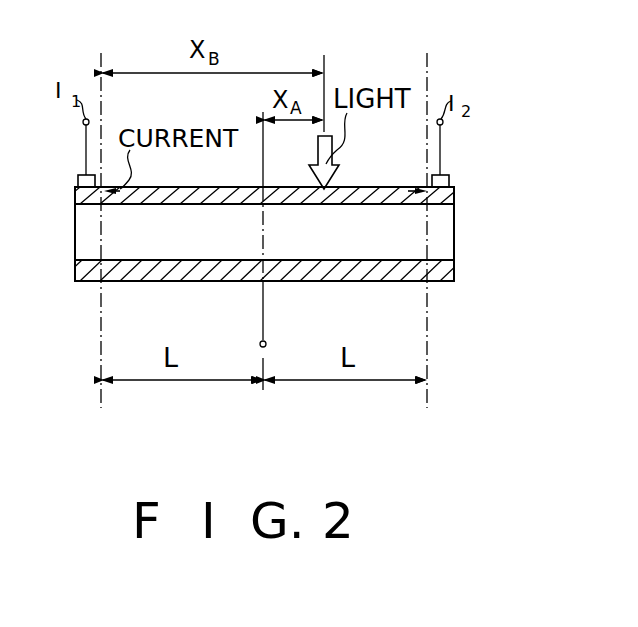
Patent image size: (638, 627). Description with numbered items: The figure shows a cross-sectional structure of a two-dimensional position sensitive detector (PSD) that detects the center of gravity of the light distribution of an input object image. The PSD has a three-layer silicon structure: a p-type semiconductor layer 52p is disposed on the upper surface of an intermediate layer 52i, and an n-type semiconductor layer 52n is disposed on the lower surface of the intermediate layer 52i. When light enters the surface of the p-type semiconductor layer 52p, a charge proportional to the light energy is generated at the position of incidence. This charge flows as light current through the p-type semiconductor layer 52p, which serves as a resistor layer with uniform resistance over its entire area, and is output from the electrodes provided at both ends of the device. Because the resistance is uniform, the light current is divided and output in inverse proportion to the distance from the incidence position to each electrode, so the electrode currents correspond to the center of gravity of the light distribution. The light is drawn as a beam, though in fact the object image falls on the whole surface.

The p-type semiconductor layer 52p is at (455, 194).
The intermediate layer 52i is at (450, 232).
The n-type semiconductor layer 52n is at (452, 267).